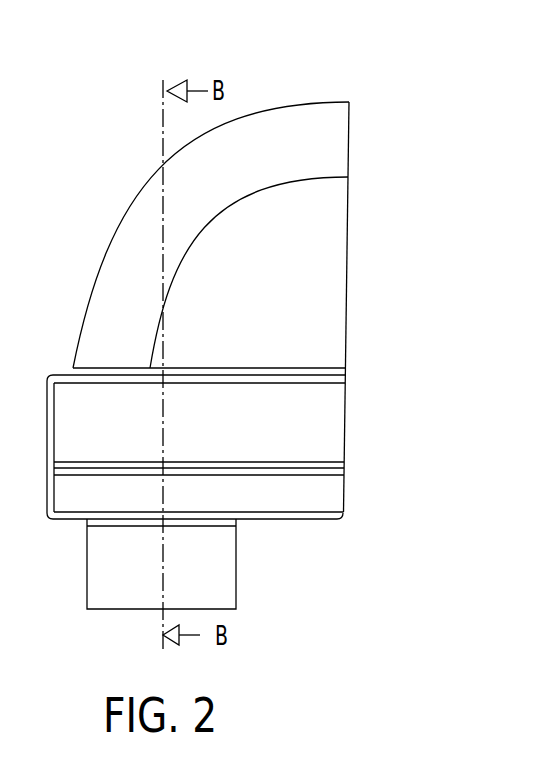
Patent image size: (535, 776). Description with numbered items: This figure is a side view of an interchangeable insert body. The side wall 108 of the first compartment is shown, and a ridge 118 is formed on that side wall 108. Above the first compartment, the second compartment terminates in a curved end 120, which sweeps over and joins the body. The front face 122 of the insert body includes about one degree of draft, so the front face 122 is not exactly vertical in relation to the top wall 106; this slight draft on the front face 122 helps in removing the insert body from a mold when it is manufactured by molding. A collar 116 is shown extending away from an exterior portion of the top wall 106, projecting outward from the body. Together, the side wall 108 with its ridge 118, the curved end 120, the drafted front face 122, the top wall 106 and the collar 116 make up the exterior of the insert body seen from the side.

The top wall 106 is at (284, 521).
The side wall 108 is at (313, 426).
The collar 116 is at (217, 558).
The ridge 118 is at (327, 496).
The curved end 120 is at (285, 135).
The front face 122 is at (313, 229).